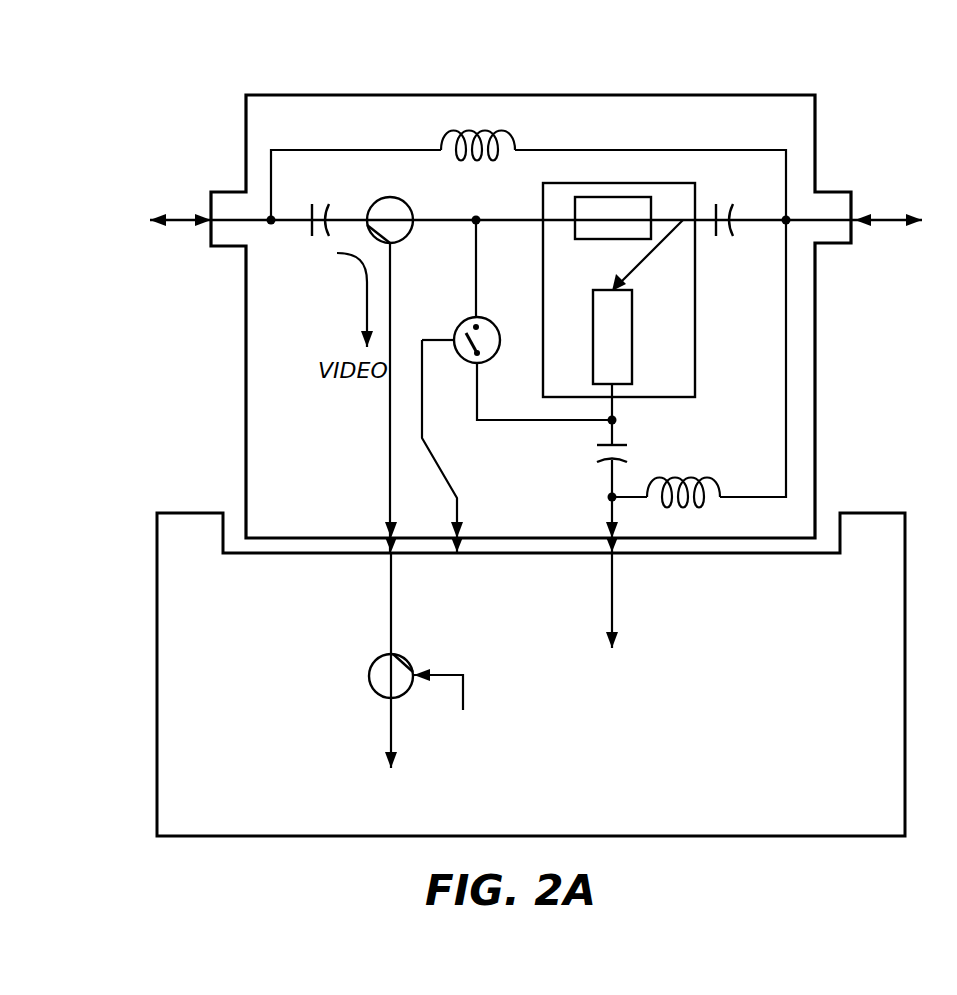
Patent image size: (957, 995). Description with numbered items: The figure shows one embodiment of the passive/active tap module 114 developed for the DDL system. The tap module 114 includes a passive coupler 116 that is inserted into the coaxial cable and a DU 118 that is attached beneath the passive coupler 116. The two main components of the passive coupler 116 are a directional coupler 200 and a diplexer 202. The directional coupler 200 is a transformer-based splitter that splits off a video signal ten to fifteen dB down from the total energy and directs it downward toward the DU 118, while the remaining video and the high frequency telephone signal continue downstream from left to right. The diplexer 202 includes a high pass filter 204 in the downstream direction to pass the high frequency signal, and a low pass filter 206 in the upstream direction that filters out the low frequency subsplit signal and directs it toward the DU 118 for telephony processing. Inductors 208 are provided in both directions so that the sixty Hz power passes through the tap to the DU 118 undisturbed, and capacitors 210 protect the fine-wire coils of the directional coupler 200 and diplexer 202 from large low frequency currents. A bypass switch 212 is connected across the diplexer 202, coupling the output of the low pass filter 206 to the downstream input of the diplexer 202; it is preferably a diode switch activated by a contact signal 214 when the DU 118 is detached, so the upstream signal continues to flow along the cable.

The passive/active tap module 114 is at (845, 146).
The passive coupler 116 is at (246, 106).
The DU 118 is at (740, 838).
The directional coupler 200 is at (378, 204).
The diplexer 202 is at (650, 183).
The high pass filter 204 is at (606, 240).
The low pass filter 206 is at (632, 328).
The inductors 208 is at (515, 140).
The capacitors 210 is at (317, 244).
The bypass switch 212 is at (462, 320).
The contact signal 214 is at (437, 458).